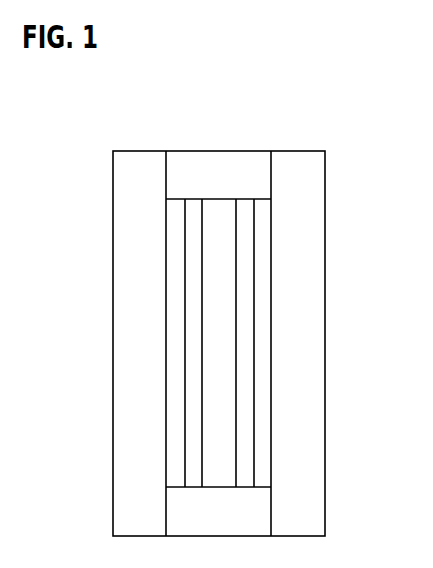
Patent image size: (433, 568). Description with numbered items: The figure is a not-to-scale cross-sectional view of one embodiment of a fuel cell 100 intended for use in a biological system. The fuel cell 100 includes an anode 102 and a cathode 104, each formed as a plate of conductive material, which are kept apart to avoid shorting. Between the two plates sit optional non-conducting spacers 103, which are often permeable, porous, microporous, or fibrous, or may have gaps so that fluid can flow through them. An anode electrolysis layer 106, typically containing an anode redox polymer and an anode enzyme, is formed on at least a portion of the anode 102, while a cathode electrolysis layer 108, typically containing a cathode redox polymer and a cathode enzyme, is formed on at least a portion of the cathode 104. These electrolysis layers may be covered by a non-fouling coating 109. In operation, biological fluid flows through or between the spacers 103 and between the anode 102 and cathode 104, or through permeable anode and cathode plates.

The fuel cell 100 is at (230, 134).
The anode 102 is at (128, 180).
The spacers 103 is at (248, 158).
The cathode 104 is at (315, 178).
The anode electrolysis layer 106 is at (173, 234).
The cathode electrolysis layer 108 is at (262, 285).
The non-fouling coating 109 is at (193, 210).